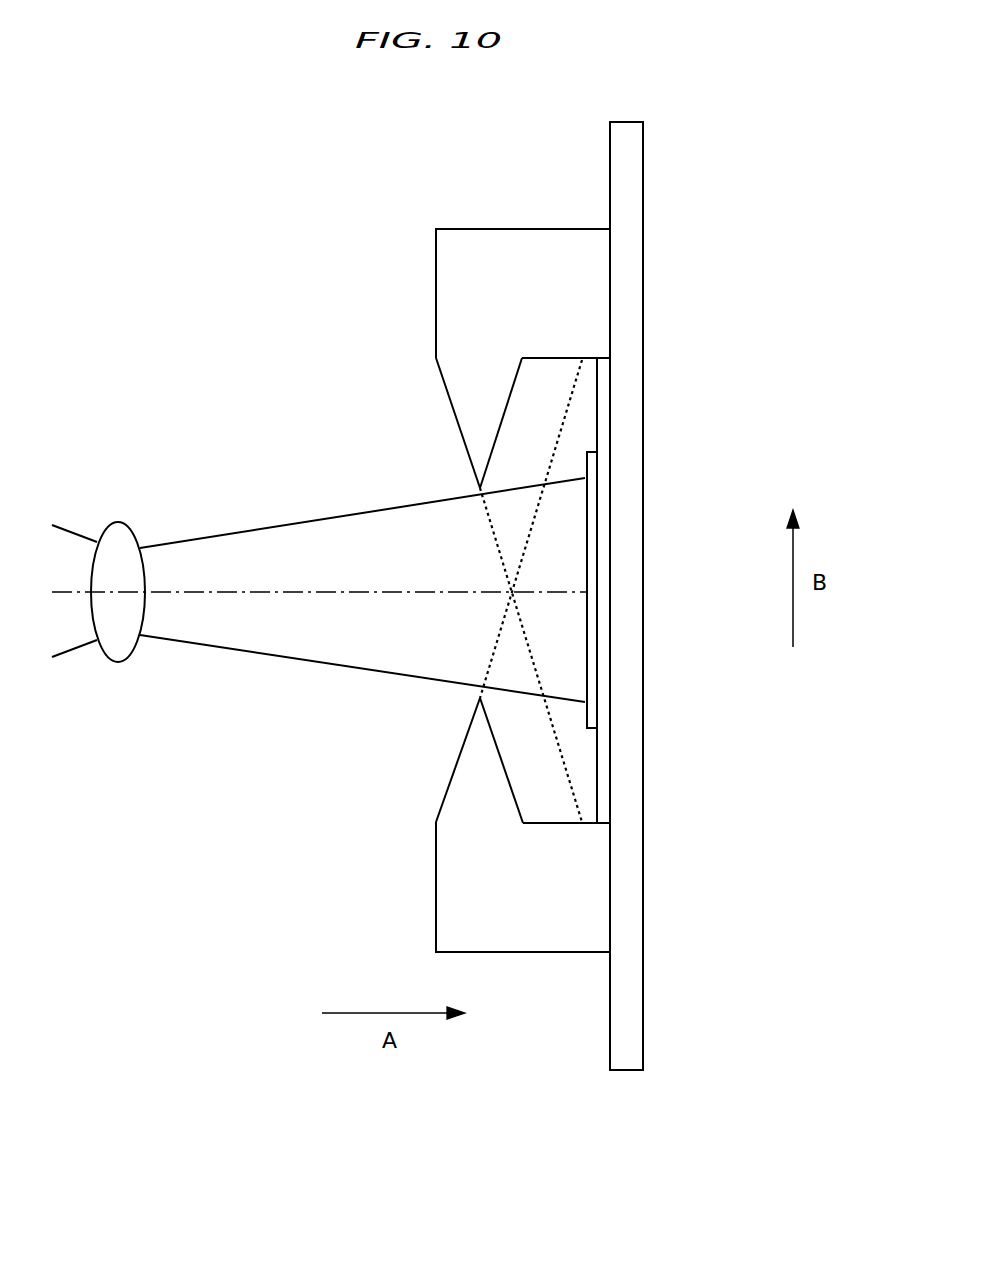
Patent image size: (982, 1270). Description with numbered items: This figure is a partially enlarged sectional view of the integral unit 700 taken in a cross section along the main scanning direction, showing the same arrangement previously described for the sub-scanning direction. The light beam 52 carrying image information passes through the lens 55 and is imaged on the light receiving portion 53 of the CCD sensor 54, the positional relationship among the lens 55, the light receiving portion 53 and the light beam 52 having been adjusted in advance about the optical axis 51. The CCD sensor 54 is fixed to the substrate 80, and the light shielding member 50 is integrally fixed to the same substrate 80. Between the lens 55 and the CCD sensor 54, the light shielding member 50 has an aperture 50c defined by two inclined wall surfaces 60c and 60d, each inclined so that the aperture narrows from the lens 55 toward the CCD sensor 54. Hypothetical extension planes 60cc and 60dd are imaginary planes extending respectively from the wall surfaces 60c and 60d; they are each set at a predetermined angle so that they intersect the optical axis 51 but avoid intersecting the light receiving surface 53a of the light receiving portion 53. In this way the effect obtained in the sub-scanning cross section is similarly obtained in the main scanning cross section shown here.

The integral unit 700 is at (303, 266).
The substrate 80 is at (635, 188).
The light shielding member 50 is at (478, 250).
The aperture 50c is at (480, 488).
The wall surface 60c is at (458, 428).
The wall surface 60d is at (452, 770).
The hypothetical extension plane 60cc is at (566, 767).
The hypothetical extension plane 60dd is at (567, 425).
The light receiving portion 53 is at (592, 553).
The light receiving surface 53a is at (587, 645).
The CCD sensor 54 is at (603, 495).
The lens 55 is at (117, 537).
The optical axis 51 is at (220, 591).
The light beam 52 is at (318, 519).